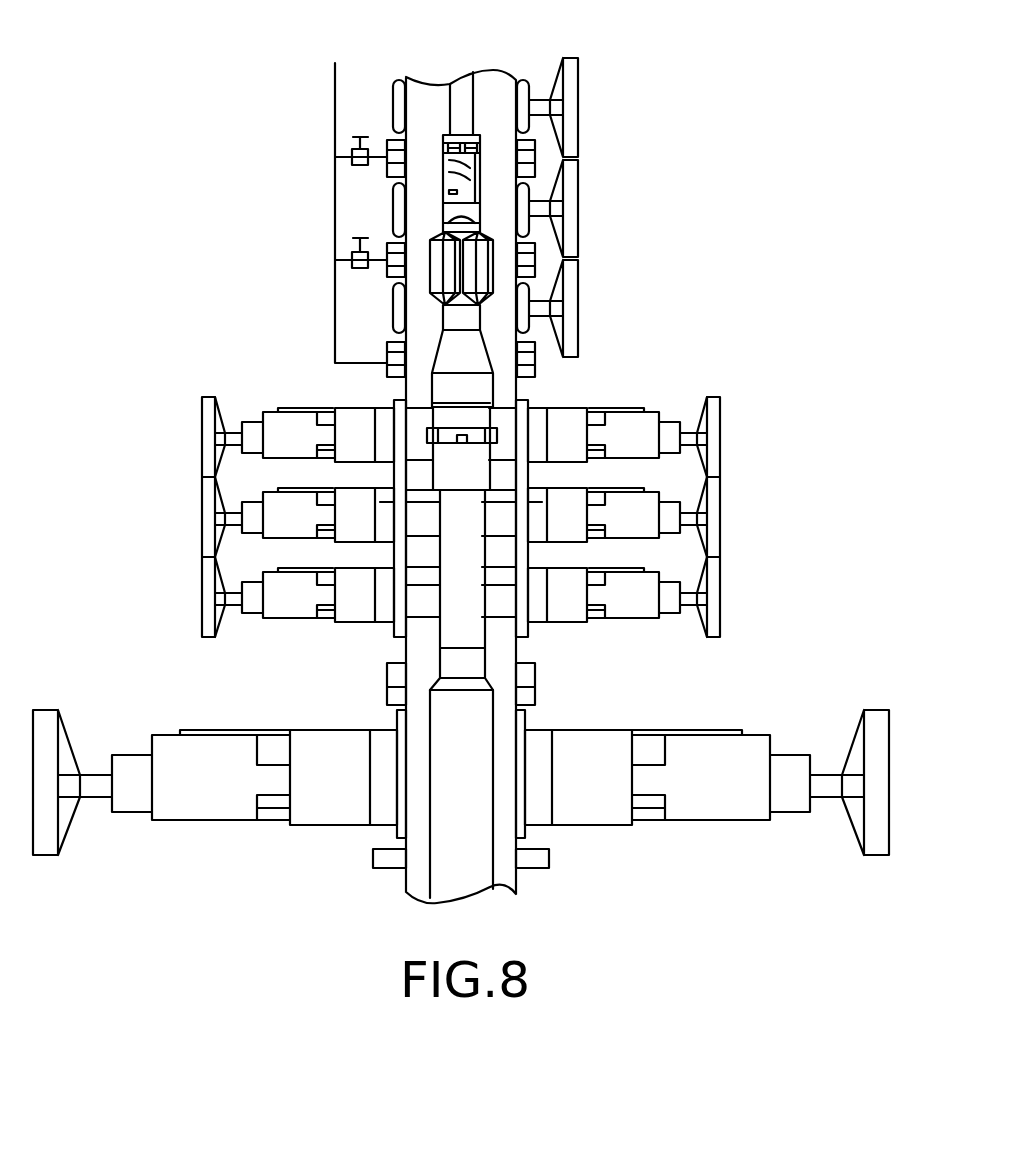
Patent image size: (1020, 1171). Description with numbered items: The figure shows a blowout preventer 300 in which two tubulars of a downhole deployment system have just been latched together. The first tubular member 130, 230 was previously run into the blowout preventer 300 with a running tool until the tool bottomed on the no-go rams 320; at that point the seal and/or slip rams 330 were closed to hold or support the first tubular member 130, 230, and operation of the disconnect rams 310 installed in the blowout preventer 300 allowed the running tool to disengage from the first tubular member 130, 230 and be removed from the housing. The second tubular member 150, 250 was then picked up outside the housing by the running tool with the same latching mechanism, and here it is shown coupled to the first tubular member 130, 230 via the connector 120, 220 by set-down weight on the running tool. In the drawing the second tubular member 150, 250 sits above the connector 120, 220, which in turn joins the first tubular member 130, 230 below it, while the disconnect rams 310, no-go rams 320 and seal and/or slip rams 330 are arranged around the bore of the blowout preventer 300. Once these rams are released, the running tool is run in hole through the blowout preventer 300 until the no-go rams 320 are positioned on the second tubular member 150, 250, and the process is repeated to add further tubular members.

The blowout preventer 300 is at (461, 459).
The second tubular member 150 is at (505, 67).
The second tubular member 250 is at (465, 102).
The connector 120 is at (343, 312).
The connector 220 is at (458, 418).
The first tubular member 130 is at (595, 804).
The first tubular member 230 is at (465, 803).
The disconnect rams 310 is at (507, 430).
The no-go rams 320 is at (498, 520).
The seal and/or slip rams 330 is at (420, 602).